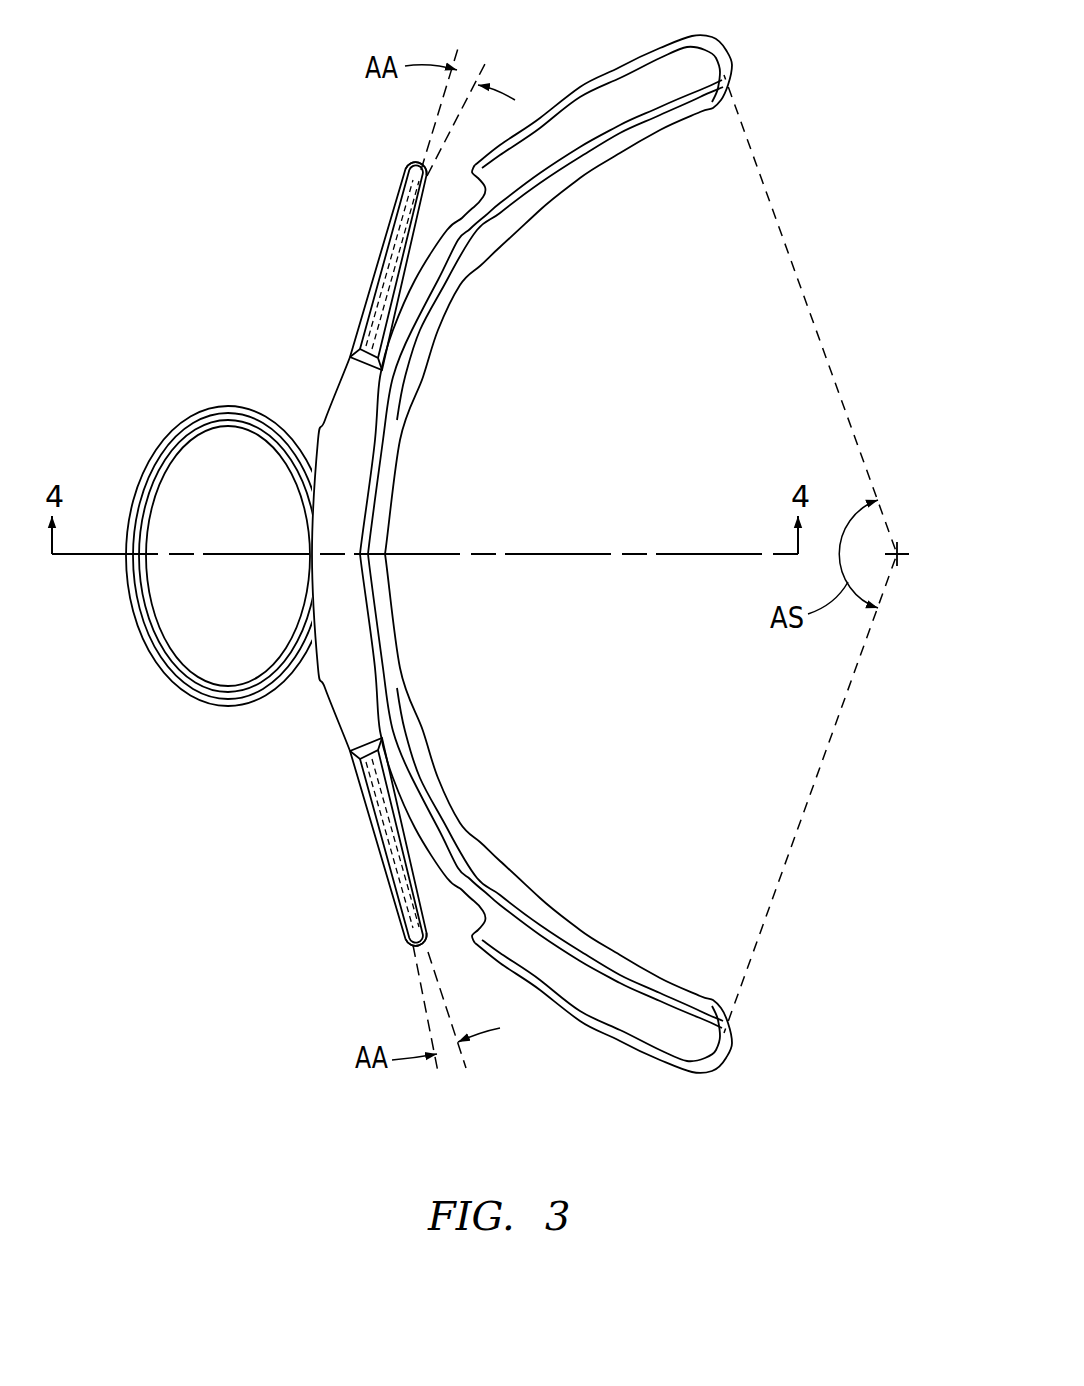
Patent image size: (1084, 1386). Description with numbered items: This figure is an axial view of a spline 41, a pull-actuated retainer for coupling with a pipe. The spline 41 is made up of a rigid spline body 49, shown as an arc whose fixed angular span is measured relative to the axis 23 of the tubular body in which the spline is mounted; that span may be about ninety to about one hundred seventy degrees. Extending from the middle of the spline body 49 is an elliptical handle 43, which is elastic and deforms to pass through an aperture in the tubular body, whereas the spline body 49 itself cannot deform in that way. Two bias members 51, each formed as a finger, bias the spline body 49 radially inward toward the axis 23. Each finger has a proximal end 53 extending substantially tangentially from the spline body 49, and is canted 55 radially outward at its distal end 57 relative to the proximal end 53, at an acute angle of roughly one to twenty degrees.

The spline 41 is at (318, 52).
The handle 43 is at (163, 440).
The spline body 49 is at (653, 80).
The bias member 51 is at (352, 556).
The proximal end 53 is at (350, 333).
The cant 55 is at (388, 238).
The distal end 57 is at (407, 173).
The axis 23 is at (903, 549).